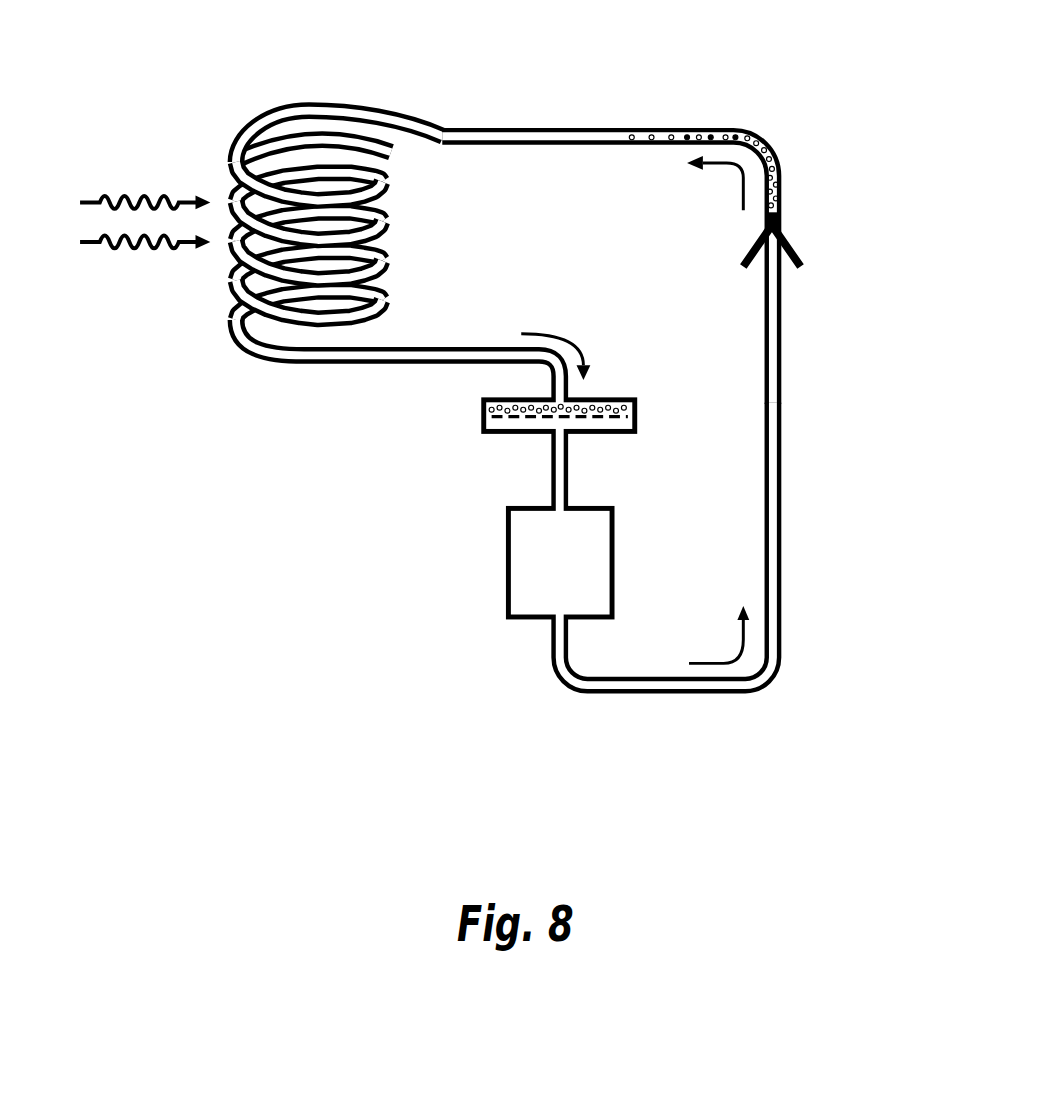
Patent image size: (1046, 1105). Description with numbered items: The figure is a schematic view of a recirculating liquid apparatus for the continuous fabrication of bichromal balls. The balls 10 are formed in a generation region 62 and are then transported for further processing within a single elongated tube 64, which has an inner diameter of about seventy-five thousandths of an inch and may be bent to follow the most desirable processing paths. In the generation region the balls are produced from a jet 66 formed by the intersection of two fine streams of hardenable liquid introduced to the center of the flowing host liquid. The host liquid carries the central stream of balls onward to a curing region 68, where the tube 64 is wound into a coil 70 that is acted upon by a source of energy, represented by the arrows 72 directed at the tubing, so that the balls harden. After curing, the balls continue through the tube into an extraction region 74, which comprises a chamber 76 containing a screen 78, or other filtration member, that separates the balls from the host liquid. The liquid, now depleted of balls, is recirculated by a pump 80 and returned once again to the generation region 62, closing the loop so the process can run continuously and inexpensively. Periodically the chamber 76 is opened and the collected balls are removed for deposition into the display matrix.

The balls 10 is at (740, 122).
The generation region 62 is at (570, 375).
The elongated tube 64 is at (521, 123).
The jet 66 is at (768, 212).
The curing region 68 is at (446, 208).
The coil 70 is at (240, 252).
The arrows 72 is at (132, 222).
The extraction region 74 is at (466, 409).
The chamber 76 is at (598, 432).
The screen 78 is at (537, 413).
The pump 80 is at (527, 558).